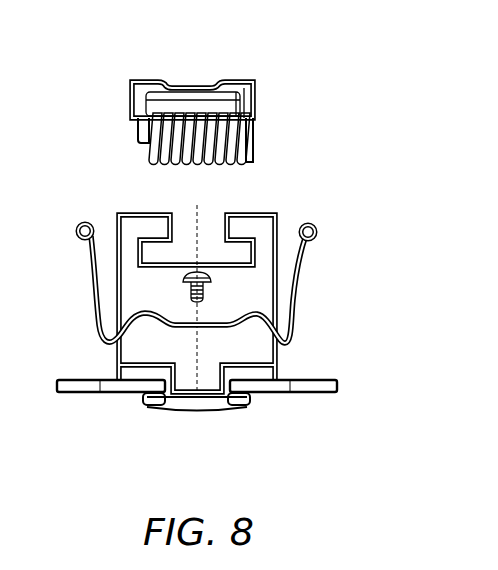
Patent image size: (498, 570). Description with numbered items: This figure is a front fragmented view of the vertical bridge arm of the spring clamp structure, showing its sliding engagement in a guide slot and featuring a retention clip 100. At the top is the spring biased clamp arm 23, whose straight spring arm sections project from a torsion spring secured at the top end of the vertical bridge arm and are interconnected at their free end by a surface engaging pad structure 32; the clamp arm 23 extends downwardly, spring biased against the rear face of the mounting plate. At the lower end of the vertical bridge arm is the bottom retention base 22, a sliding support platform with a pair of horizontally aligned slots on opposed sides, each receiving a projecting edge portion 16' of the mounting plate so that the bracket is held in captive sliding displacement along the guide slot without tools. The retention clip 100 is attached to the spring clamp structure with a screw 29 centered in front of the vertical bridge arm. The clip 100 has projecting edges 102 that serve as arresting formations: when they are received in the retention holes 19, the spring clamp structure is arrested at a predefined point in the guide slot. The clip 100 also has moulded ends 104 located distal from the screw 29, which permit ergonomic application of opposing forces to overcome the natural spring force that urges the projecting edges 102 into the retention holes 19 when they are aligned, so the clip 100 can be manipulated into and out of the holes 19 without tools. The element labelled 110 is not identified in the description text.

The surface engaging pad structure 32 is at (246, 92).
The spring biased clamp arm 23 is at (252, 145).
The screw 29 is at (200, 270).
The moulded ends 104 is at (316, 226).
The retention clip 100 is at (336, 291).
The bottom retention base 22 is at (128, 342).
The projecting edges 102 is at (292, 346).
The mounting plate 110 is at (287, 393).
The retention holes 19 is at (282, 394).
The projecting edge portions 16' is at (205, 435).